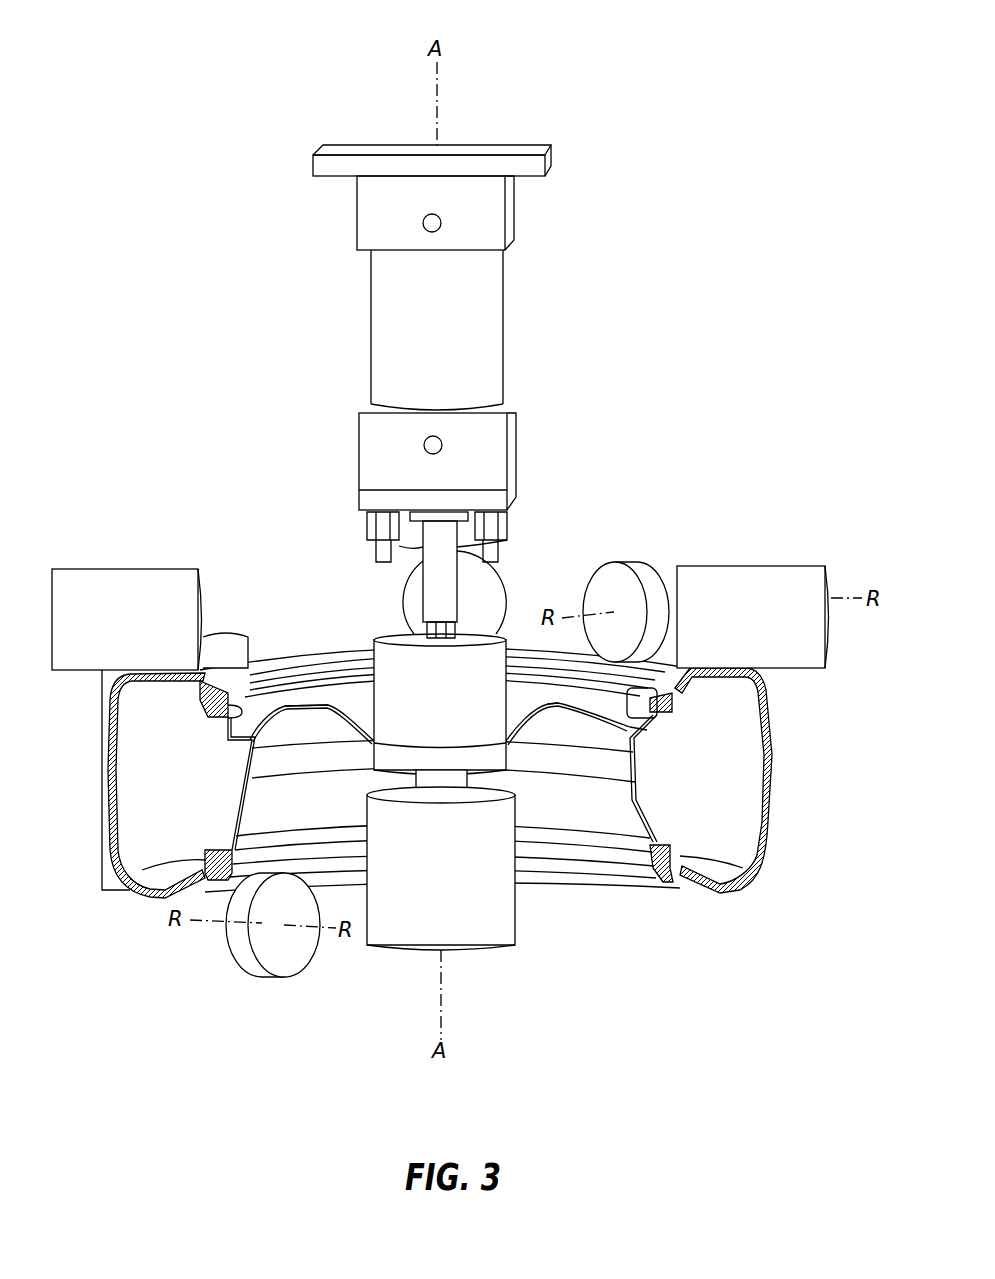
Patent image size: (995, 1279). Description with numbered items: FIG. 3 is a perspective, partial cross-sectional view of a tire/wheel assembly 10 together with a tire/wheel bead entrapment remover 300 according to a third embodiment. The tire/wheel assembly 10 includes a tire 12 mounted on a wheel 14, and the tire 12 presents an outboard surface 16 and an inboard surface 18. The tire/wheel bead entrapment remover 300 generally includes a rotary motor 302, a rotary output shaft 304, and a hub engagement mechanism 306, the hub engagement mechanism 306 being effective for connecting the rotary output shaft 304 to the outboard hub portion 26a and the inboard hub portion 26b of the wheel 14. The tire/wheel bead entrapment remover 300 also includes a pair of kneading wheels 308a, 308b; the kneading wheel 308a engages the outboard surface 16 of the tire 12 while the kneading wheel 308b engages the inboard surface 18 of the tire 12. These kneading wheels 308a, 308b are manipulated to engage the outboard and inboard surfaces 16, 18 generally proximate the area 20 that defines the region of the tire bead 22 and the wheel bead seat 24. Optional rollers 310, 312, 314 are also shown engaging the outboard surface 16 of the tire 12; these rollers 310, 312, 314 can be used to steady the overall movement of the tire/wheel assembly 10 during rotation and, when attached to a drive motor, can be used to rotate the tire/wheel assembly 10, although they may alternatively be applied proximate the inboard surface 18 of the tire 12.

The tire/wheel bead entrapment remover 300 is at (166, 71).
The rotary motor 302 is at (383, 308).
The rotary output shaft 304 is at (399, 546).
The hub engagement mechanism 306 is at (466, 695).
The kneading wheel 308a is at (624, 562).
The kneading wheel 308b is at (245, 948).
The roller 310 is at (92, 568).
The roller 312 is at (403, 602).
The roller 314 is at (818, 668).
The tire/wheel assembly 10 is at (430, 760).
The tire 12 is at (765, 857).
The wheel 14 is at (323, 810).
The outboard surface 16 is at (330, 650).
The inboard surface 18 is at (150, 893).
The area 20 is at (215, 686).
The tire bead 22 is at (228, 733).
The wheel bead seat 24 is at (230, 742).
The outboard hub portion 26a is at (373, 738).
The inboard hub portion 26b is at (508, 745).